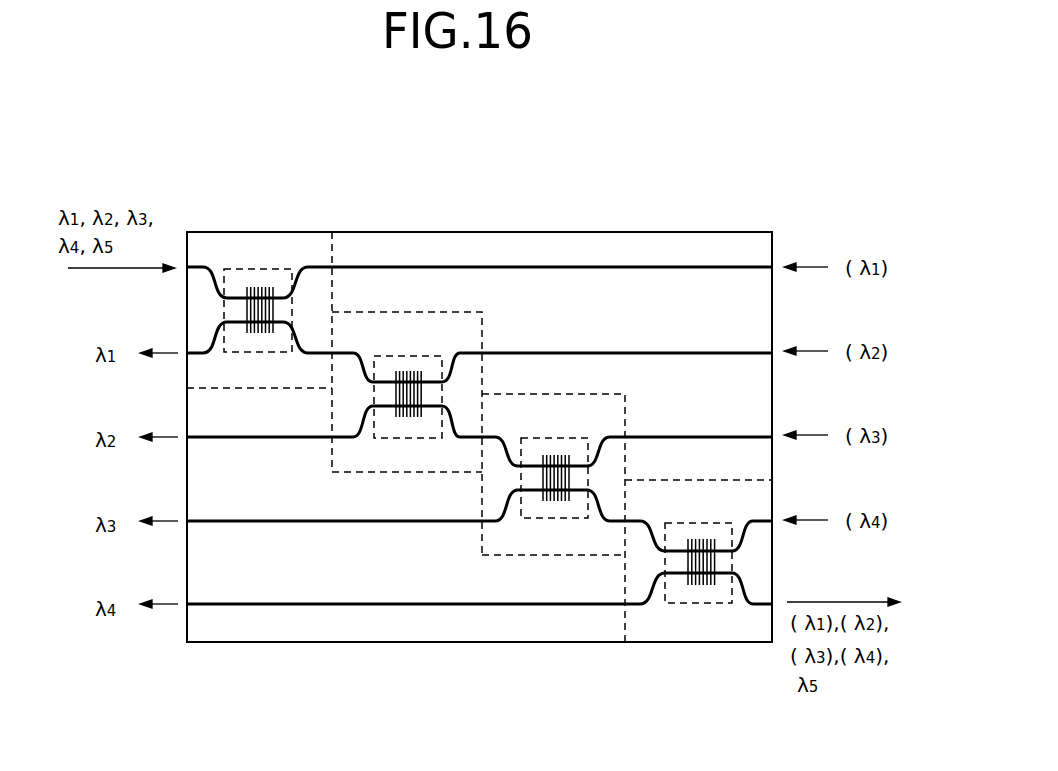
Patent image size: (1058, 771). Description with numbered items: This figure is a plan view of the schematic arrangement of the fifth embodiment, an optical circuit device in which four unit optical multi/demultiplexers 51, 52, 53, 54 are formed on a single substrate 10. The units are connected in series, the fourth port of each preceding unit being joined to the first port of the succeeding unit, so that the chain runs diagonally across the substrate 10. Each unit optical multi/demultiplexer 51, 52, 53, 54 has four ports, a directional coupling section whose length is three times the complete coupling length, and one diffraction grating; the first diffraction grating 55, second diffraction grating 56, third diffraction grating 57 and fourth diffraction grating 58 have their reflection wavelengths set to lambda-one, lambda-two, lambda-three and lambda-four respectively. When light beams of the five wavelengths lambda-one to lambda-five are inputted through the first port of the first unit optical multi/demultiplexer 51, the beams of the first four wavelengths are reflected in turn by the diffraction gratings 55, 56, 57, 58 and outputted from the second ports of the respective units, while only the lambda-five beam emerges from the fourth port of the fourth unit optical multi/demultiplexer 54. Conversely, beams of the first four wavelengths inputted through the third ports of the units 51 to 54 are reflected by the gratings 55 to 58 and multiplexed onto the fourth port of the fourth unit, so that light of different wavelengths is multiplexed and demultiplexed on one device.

The substrate 10 is at (223, 643).
The first unit optical multi/demultiplexer 51 is at (213, 232).
The second unit optical multi/demultiplexer 52 is at (385, 310).
The third unit optical multi/demultiplexer 53 is at (484, 558).
The fourth unit optical multi/demultiplexer 54 is at (637, 643).
The first diffraction grating 55 is at (262, 278).
The second diffraction grating 56 is at (418, 362).
The third diffraction grating 57 is at (550, 510).
The fourth diffraction grating 58 is at (702, 593).